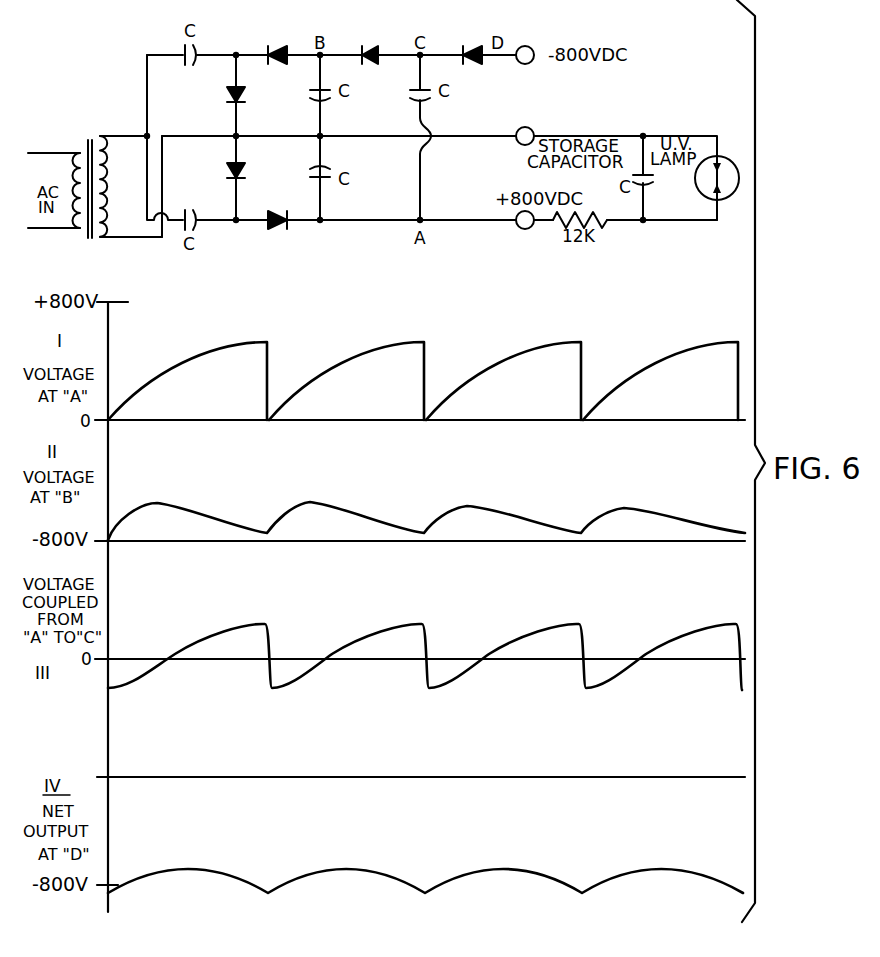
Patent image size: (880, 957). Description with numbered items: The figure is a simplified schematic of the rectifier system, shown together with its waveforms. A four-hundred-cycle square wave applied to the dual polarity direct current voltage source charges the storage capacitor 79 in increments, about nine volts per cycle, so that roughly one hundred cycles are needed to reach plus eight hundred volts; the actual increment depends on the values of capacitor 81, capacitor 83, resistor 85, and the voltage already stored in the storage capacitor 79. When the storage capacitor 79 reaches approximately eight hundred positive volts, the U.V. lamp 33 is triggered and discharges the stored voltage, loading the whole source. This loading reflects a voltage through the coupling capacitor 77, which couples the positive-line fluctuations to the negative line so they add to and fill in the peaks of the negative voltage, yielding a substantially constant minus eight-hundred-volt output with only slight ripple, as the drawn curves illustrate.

The coupling capacitor 77 is at (424, 104).
The storage capacitor 79 is at (651, 186).
The capacitor 81 is at (185, 211).
The capacitor 83 is at (324, 168).
The resistor 85 is at (555, 219).
The U.V. lamp 33 is at (721, 200).